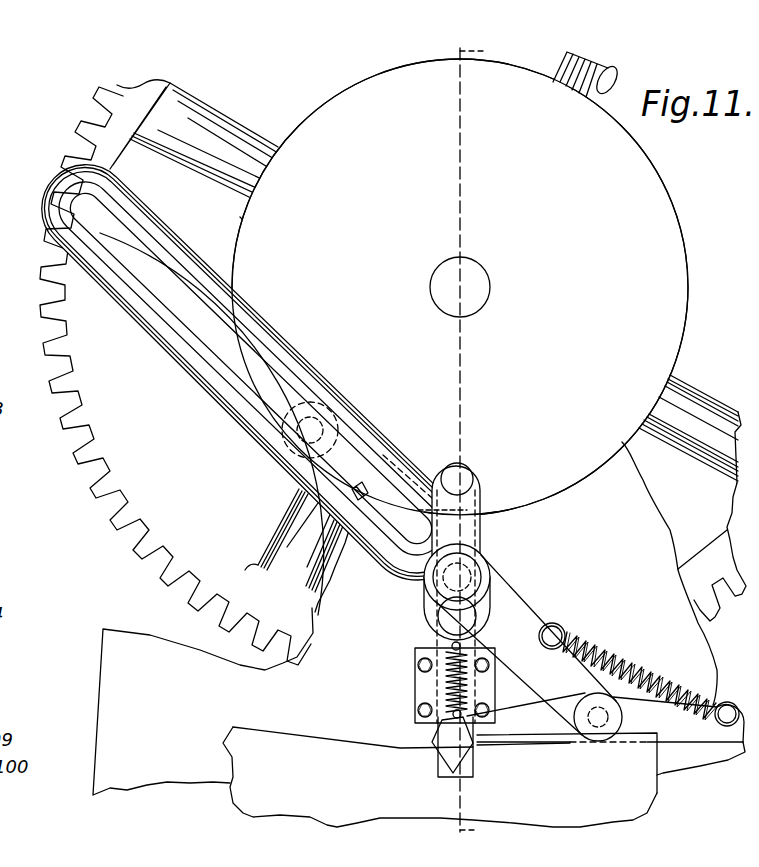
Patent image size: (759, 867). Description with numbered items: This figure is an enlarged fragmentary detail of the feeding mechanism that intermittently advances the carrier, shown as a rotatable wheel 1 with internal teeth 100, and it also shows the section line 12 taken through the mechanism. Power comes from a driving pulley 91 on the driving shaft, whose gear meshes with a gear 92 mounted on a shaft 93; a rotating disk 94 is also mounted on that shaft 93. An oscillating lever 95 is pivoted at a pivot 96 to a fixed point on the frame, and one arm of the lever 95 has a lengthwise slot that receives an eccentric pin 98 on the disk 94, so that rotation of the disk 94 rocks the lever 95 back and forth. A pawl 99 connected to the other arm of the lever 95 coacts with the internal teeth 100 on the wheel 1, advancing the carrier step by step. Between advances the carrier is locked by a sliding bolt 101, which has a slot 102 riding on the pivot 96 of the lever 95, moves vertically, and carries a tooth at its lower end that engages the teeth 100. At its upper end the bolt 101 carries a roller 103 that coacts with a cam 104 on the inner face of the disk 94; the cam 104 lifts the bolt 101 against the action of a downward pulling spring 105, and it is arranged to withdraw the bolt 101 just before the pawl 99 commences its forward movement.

The rotatable wheel 1 is at (350, 778).
The section line 12- 12 is at (485, 443).
The driving pulley 91 is at (205, 340).
The gear 92 is at (107, 480).
The shaft 93 is at (437, 283).
The rotating disk 94 is at (675, 272).
The oscillating lever 95 is at (412, 570).
The pivot 96 is at (463, 575).
The eccentric pin 98 is at (315, 427).
The pawl 99 is at (527, 728).
The internal teeth 100 is at (462, 767).
The sliding bolt 101 is at (414, 652).
The slot 102 is at (437, 610).
The roller 103 is at (476, 476).
The cam 104 is at (277, 305).
The spring 105 is at (443, 690).